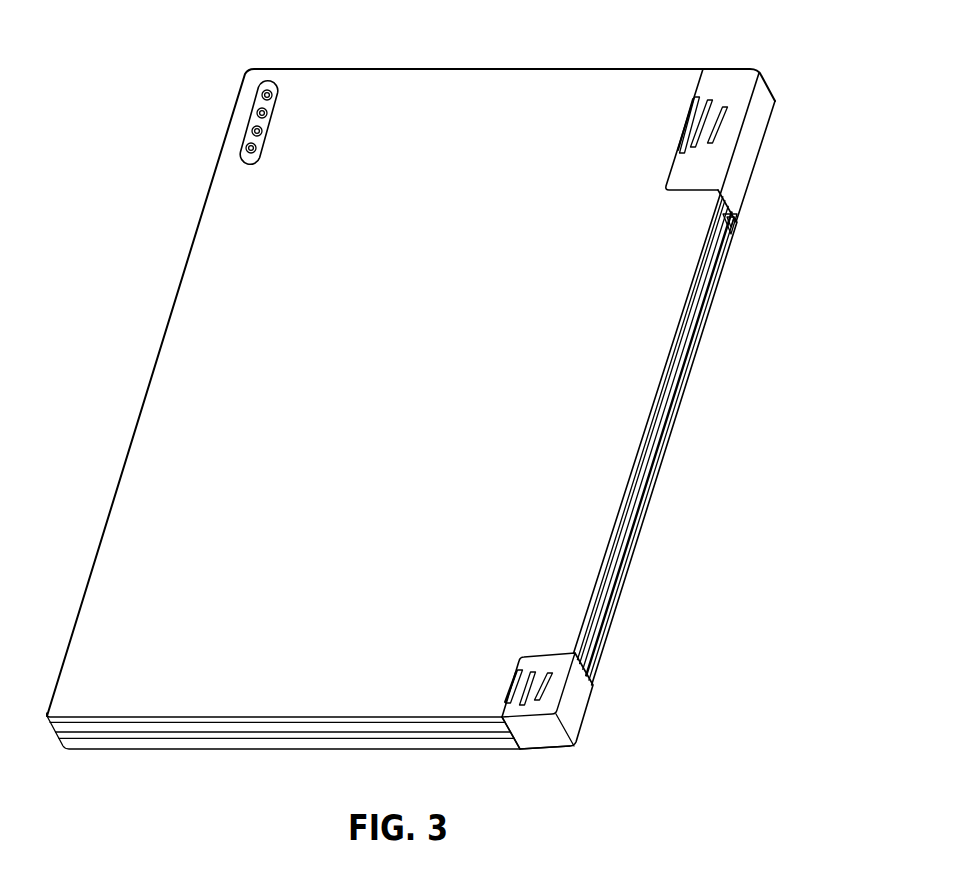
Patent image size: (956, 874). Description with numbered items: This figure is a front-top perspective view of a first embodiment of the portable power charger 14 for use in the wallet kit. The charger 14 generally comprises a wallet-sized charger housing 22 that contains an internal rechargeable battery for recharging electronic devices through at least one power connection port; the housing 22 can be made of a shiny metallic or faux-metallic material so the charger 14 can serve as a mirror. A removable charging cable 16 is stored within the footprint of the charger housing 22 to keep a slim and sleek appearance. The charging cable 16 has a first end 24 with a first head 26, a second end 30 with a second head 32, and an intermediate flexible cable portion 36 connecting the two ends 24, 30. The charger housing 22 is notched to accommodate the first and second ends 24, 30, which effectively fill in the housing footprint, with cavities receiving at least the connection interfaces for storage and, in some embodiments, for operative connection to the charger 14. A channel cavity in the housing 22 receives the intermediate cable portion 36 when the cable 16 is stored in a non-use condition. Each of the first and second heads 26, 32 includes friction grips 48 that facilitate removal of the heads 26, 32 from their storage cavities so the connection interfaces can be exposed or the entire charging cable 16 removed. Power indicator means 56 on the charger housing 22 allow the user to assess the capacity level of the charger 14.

The power charger 14 is at (115, 310).
The charging cable 16 is at (784, 127).
The charger housing 22 is at (140, 503).
The first end 24 is at (767, 61).
The first head 26 is at (722, 80).
The second end 30 is at (598, 709).
The second head 32 is at (533, 741).
The intermediate flexible cable portion 36 is at (663, 428).
The friction grips 48 is at (495, 670).
The power indicator means 56 is at (302, 60).